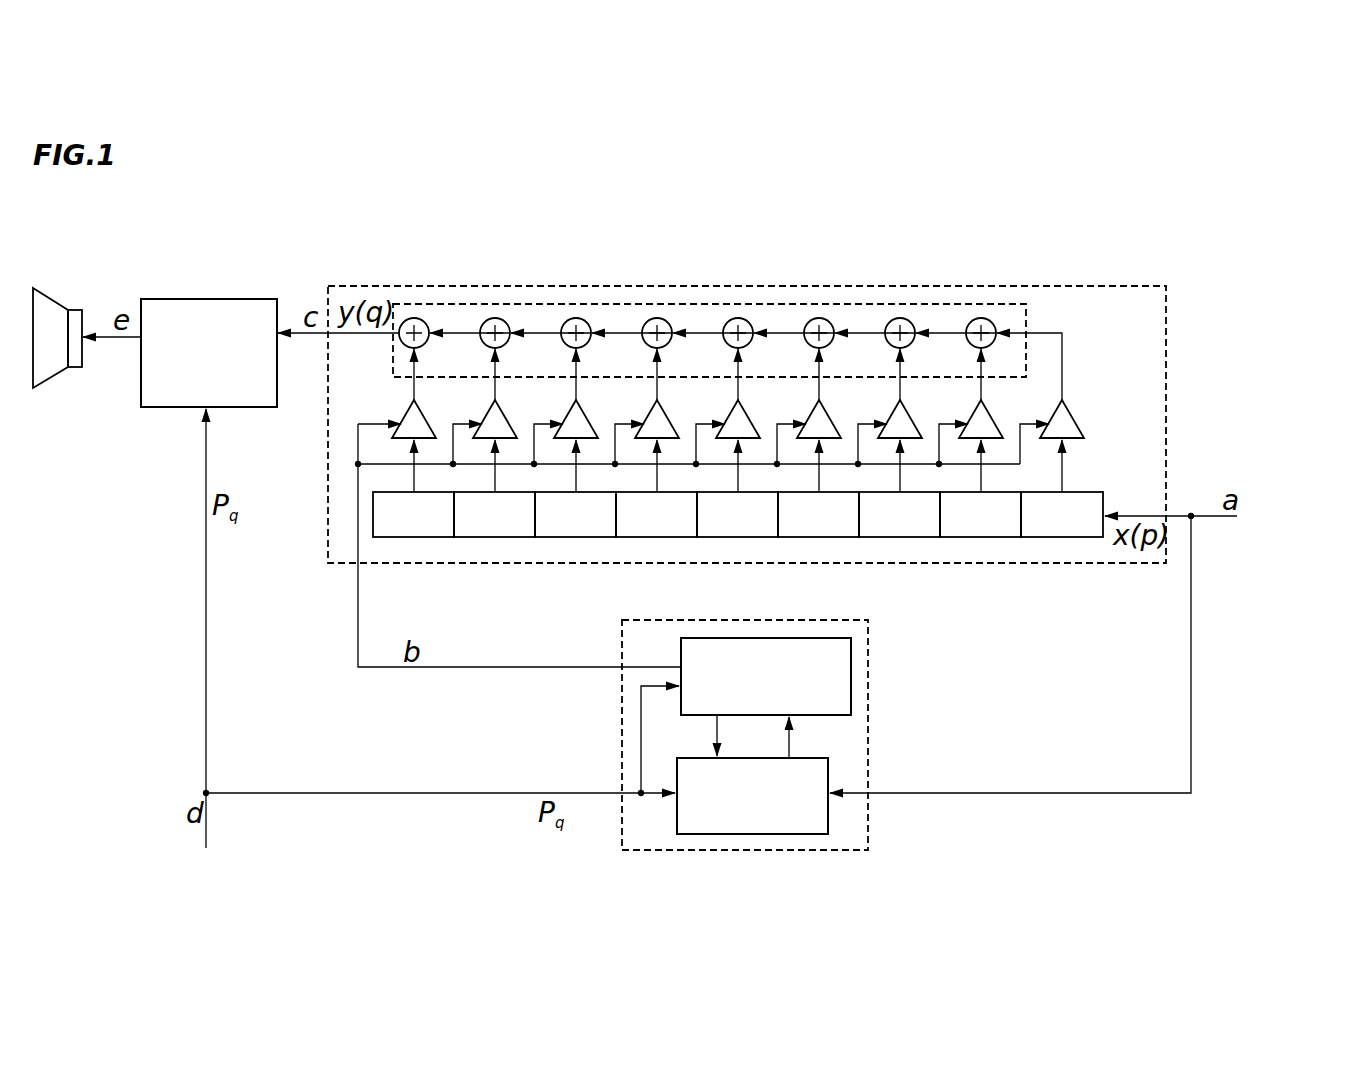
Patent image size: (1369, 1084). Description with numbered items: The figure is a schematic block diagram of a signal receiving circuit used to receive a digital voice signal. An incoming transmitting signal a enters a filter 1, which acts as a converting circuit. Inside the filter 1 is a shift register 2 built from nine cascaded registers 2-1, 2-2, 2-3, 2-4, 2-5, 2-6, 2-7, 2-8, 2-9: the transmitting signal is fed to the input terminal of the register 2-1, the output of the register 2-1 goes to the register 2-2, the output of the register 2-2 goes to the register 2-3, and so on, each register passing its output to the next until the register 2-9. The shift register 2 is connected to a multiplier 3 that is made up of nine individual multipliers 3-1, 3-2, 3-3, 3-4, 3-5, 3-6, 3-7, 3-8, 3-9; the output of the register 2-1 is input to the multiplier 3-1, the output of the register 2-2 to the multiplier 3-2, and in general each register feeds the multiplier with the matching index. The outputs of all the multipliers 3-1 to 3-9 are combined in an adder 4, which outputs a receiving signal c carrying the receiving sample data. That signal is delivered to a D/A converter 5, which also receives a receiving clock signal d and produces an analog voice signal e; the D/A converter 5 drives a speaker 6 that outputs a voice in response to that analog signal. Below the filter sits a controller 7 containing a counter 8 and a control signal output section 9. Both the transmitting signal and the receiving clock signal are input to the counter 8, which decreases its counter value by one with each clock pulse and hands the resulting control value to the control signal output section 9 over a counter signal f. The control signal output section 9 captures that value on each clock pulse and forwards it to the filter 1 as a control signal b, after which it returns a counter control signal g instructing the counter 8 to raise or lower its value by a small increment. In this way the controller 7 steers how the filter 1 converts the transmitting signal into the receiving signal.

The filter 1 is at (874, 286).
The shift register 2 is at (868, 528).
The register 2-1 is at (1043, 537).
The register 2-2 is at (962, 537).
The register 2-3 is at (881, 537).
The register 2-4 is at (800, 537).
The register 2-5 is at (719, 537).
The register 2-6 is at (638, 537).
The register 2-7 is at (557, 537).
The register 2-8 is at (476, 537).
The register 2-9 is at (395, 537).
The multiplier 3 is at (867, 365).
The multiplier 3-1 is at (1067, 407).
The multiplier 3-2 is at (986, 407).
The multiplier 3-3 is at (905, 407).
The multiplier 3-4 is at (824, 407).
The multiplier 3-5 is at (743, 407).
The multiplier 3-6 is at (662, 407).
The multiplier 3-7 is at (581, 407).
The multiplier 3-8 is at (500, 407).
The multiplier 3-9 is at (419, 407).
The adder 4 is at (535, 303).
The D/A converter 5 is at (262, 299).
The speaker 6 is at (37, 290).
The controller 7 is at (855, 735).
The counter 8 is at (828, 768).
The control signal output section 9 is at (851, 652).